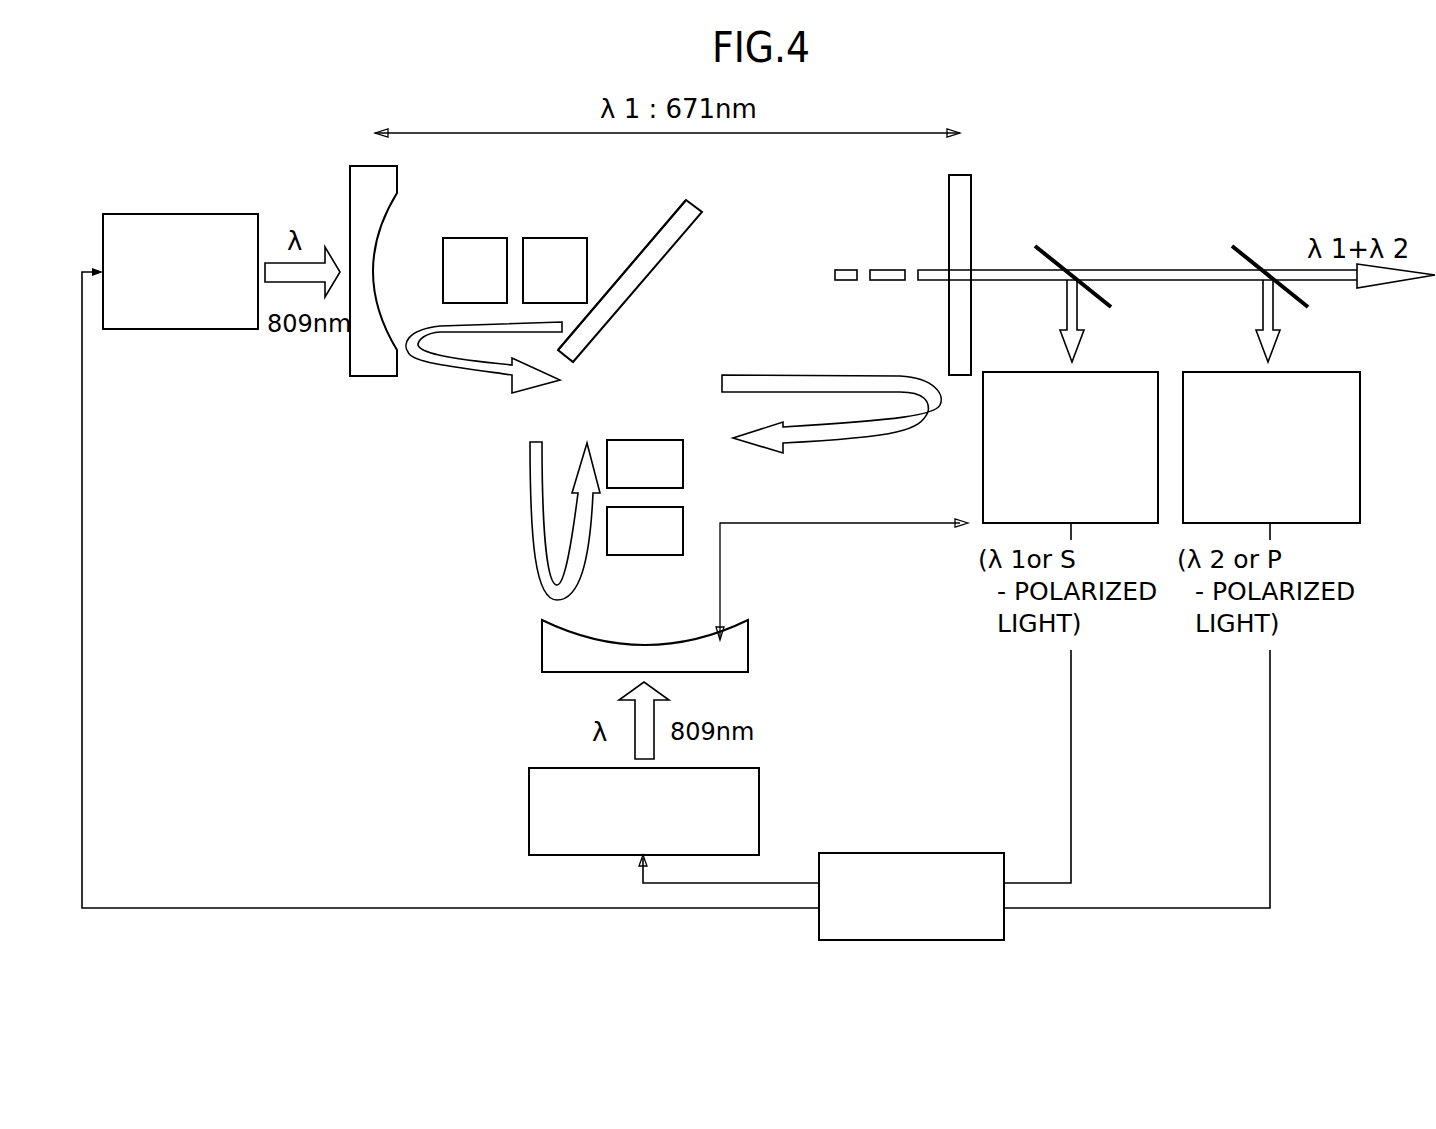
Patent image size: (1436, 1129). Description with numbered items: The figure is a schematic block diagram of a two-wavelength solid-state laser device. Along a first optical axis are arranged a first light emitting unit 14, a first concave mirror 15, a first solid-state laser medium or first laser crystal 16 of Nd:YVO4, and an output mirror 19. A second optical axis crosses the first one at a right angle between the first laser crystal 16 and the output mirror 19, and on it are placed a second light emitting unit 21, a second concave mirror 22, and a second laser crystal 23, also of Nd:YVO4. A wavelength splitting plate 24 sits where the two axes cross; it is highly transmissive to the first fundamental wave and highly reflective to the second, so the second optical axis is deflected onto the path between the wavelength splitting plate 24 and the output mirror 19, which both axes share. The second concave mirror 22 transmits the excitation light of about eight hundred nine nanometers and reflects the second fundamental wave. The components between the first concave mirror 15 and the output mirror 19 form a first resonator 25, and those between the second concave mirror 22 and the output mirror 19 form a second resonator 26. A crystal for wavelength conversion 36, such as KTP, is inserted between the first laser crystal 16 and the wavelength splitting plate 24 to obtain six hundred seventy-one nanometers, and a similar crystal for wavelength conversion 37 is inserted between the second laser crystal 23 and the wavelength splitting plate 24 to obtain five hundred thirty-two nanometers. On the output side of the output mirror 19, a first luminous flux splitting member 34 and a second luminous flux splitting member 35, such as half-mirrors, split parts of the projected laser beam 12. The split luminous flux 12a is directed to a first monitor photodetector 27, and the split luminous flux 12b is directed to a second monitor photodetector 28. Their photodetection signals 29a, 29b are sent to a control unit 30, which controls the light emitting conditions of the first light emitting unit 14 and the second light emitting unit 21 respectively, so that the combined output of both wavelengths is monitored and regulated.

The first light emitting unit 14 is at (147, 214).
The first concave mirror 15 is at (362, 166).
The first solid-state laser medium (first laser crystal) 16 is at (455, 238).
The crystal for wavelength conversion (KTP) 36 is at (540, 238).
The wavelength splitting plate 24 is at (640, 290).
The first resonator 25 is at (650, 217).
The output mirror 19 is at (965, 175).
The laser beam 12 is at (997, 270).
The first luminous flux splitting member 34 is at (1062, 270).
The second luminous flux splitting member 35 is at (1252, 257).
The luminous flux 12a is at (1077, 320).
The luminous flux 12b is at (1273, 320).
The first monitor photodetector 27 is at (983, 466).
The second monitor photodetector 28 is at (1360, 462).
The photodetection signal 29a is at (1071, 748).
The photodetection signal 29b is at (1270, 748).
The control unit 30 is at (912, 853).
The second light emitting unit 21 is at (529, 808).
The second concave mirror 22 is at (542, 640).
The crystal for wavelength conversion (KTP) 37 is at (655, 440).
The second solid-state laser medium (second laser crystal) 23 is at (683, 530).
The second resonator 26 is at (742, 573).